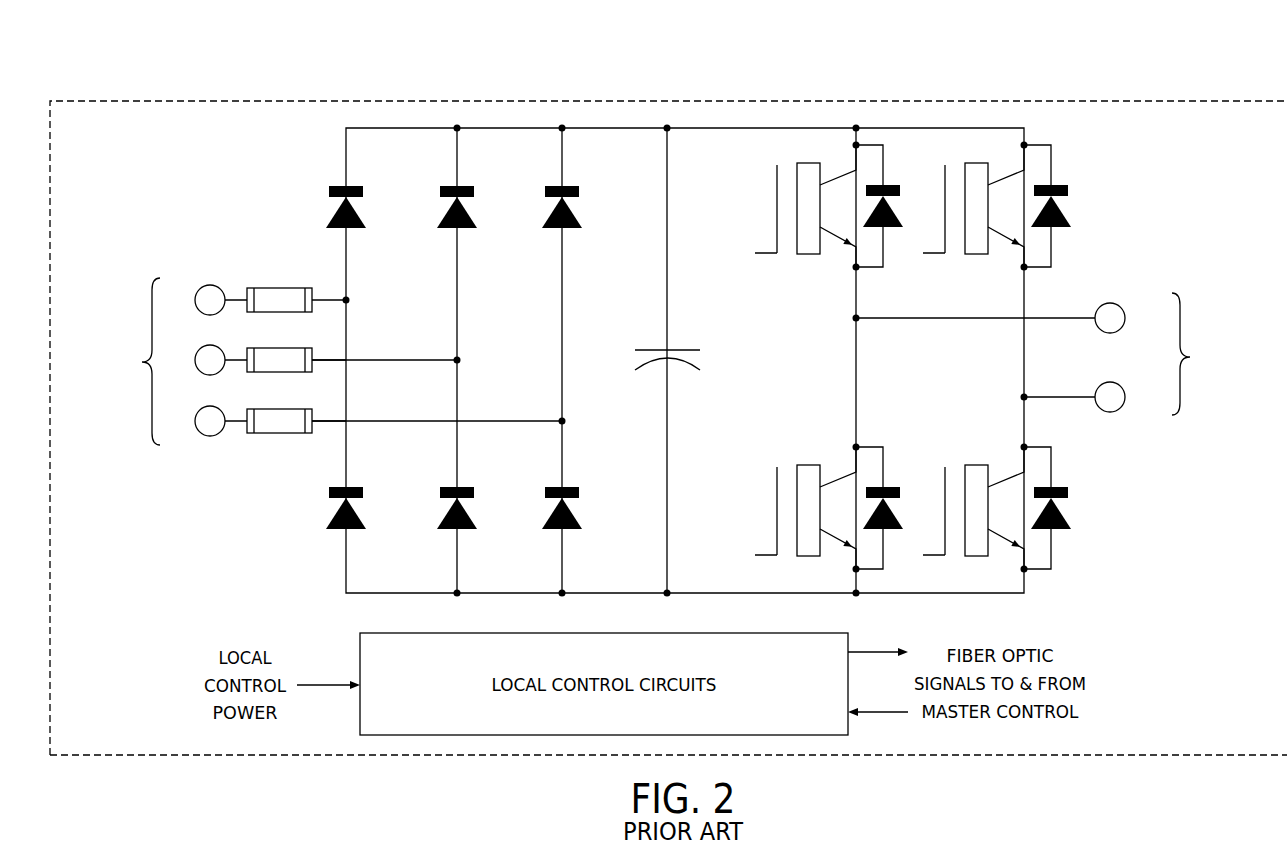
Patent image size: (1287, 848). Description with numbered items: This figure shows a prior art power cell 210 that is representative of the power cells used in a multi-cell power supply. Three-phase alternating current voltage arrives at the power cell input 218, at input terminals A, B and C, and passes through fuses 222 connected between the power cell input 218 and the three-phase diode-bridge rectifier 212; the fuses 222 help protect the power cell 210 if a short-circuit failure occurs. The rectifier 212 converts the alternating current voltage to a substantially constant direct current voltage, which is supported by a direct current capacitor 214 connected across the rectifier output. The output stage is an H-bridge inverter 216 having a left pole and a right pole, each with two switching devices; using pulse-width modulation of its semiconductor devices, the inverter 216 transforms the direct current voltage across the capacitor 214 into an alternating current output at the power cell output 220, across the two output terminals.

The power cell 210 is at (165, 99).
The three-phase diode-bridge rectifier 212 is at (330, 68).
The direct current (DC) capacitor 214 is at (628, 68).
The H-bridge inverter 216 is at (735, 68).
The power cell input 218 is at (325, 354).
The power cell output 220 is at (1054, 353).
The fuse 222 is at (273, 433).